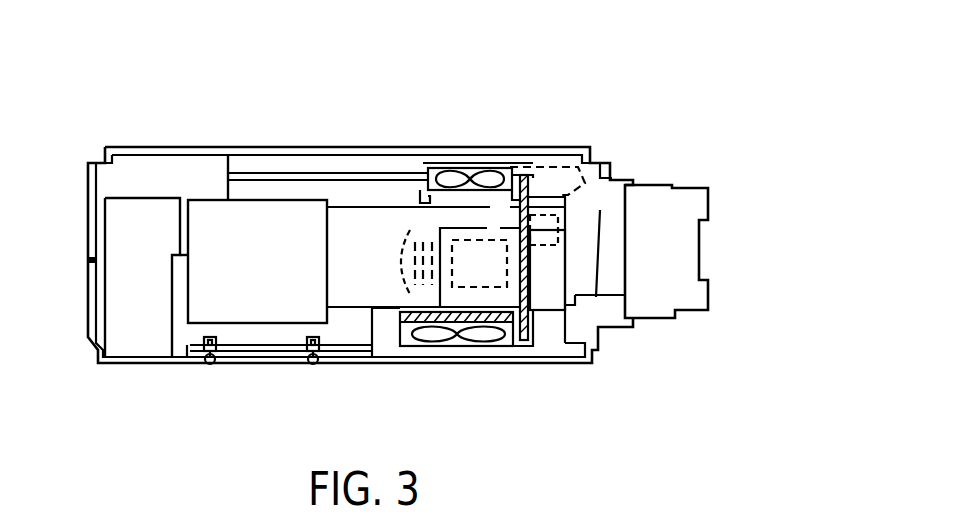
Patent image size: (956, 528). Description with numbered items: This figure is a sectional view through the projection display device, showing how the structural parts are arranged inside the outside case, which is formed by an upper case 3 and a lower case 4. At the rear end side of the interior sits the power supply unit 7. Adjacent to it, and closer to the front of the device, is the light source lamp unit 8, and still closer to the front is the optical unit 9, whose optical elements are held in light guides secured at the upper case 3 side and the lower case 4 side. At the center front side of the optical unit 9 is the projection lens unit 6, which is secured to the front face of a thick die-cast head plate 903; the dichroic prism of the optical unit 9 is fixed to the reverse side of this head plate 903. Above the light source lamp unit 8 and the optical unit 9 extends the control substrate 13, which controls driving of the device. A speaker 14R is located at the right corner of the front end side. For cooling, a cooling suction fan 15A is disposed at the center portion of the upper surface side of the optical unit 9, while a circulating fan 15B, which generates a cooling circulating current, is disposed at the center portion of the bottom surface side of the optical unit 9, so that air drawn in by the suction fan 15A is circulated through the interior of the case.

The upper case 3 is at (132, 147).
The lower case 4 is at (130, 364).
The projection lens unit 6 is at (702, 183).
The power supply unit 7 is at (144, 285).
The light source lamp unit 8 is at (225, 250).
The optical unit 9 is at (353, 200).
The control substrate 13 is at (268, 165).
The speaker 14R is at (613, 170).
The cooling suction fan 15A is at (462, 190).
The circulating fan 15B is at (440, 340).
The head plate 903 is at (530, 185).